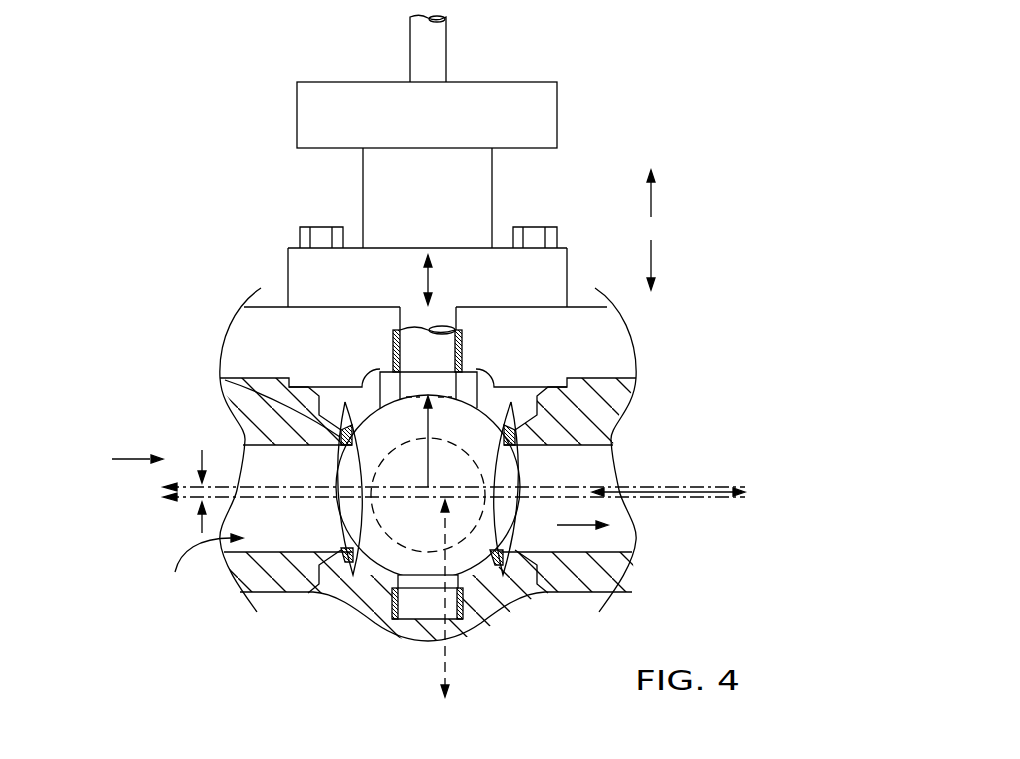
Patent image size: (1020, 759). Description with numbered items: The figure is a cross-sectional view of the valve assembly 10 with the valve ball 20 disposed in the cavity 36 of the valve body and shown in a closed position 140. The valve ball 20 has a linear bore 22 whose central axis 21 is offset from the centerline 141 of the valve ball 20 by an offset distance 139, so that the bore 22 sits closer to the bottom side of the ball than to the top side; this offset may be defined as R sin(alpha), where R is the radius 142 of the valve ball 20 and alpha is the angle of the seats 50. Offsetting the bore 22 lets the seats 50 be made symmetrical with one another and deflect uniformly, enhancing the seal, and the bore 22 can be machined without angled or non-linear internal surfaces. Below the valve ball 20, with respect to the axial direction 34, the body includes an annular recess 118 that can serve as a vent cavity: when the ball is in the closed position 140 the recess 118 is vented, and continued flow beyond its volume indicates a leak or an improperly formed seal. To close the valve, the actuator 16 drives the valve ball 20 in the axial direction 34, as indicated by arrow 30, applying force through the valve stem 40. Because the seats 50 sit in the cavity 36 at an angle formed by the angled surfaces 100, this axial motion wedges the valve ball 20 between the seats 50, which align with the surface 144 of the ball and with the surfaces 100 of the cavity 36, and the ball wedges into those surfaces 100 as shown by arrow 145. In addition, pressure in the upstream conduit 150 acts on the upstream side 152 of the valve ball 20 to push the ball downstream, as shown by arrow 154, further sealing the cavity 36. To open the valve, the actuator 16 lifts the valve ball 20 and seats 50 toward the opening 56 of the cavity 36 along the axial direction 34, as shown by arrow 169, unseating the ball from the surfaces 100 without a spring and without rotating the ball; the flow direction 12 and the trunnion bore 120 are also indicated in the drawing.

The valve assembly 10 is at (600, 68).
The flow direction 12 is at (140, 459).
The actuator 16 is at (495, 105).
The valve ball 20 is at (517, 490).
The central axis 21 is at (660, 500).
The bore 22 is at (395, 553).
The arrow 30 is at (424, 284).
The axial direction 34 is at (448, 654).
The cavity 36 is at (502, 412).
The valve stem 40 is at (442, 353).
The seats 50 is at (340, 437).
The opening 56 is at (352, 372).
The surfaces 100 is at (345, 482).
The recess 118 is at (482, 574).
The trunnion bore 120 is at (420, 602).
The offset distance 139 is at (202, 452).
The closed position 140 is at (640, 492).
The centerline 141 is at (728, 492).
The radius 142 is at (427, 417).
The surface 144 is at (355, 418).
The arrow 145 is at (651, 258).
The upstream conduit 150 is at (200, 567).
The upstream side 152 is at (345, 510).
The arrow 154 is at (630, 575).
The arrow 169 is at (651, 200).